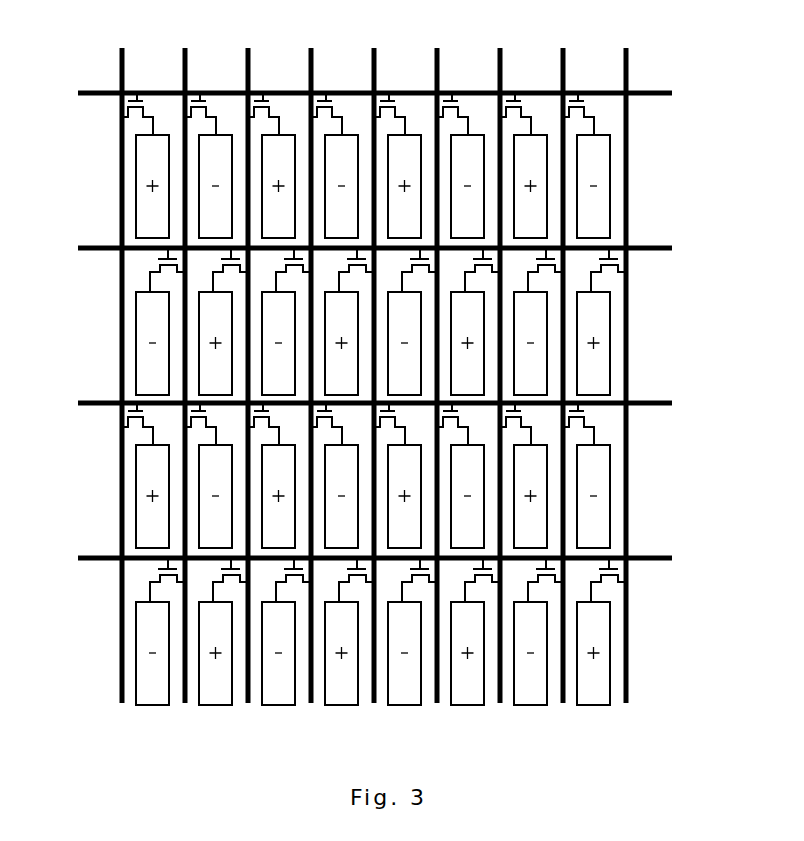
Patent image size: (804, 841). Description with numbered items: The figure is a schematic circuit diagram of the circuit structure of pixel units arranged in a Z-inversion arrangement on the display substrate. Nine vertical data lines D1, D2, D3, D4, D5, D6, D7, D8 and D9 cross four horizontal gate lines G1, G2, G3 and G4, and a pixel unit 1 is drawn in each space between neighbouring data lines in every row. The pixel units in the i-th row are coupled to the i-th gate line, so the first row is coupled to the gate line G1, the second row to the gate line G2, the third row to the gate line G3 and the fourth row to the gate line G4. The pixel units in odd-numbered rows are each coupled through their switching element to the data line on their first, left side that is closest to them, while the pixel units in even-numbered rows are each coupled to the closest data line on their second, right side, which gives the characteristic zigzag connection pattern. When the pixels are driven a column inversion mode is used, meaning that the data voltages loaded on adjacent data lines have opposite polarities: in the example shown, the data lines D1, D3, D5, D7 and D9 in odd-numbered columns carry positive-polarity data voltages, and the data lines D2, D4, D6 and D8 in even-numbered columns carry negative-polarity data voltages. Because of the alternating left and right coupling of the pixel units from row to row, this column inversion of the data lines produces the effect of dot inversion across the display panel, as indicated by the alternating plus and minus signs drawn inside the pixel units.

The pixel unit 1 is at (148, 170).
The data line D1 is at (122, 41).
The data line D2 is at (190, 35).
The data line D3 is at (248, 41).
The data line D4 is at (316, 35).
The data line D5 is at (374, 41).
The data line D6 is at (442, 35).
The data line D7 is at (500, 41).
The data line D8 is at (568, 35).
The data line D9 is at (626, 41).
The gate line G1 is at (356, 92).
The gate line G2 is at (356, 247).
The gate line G3 is at (356, 402).
The gate line G4 is at (356, 557).